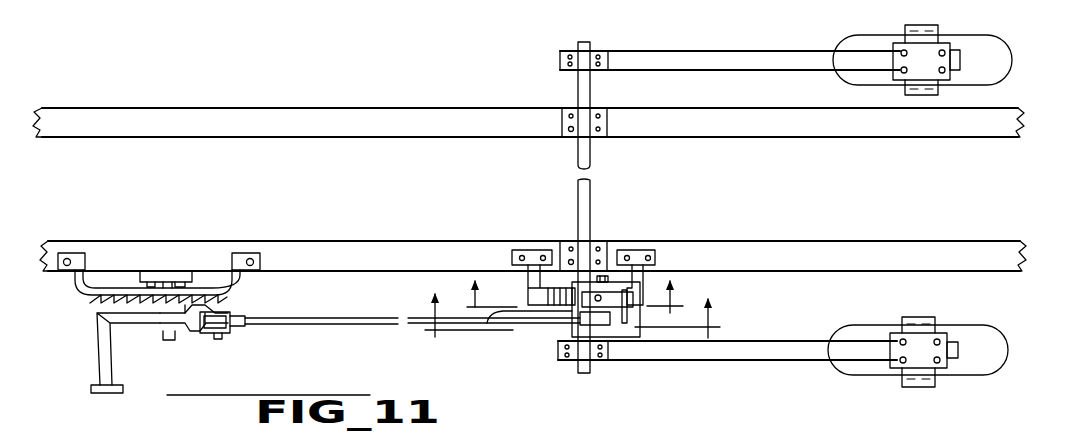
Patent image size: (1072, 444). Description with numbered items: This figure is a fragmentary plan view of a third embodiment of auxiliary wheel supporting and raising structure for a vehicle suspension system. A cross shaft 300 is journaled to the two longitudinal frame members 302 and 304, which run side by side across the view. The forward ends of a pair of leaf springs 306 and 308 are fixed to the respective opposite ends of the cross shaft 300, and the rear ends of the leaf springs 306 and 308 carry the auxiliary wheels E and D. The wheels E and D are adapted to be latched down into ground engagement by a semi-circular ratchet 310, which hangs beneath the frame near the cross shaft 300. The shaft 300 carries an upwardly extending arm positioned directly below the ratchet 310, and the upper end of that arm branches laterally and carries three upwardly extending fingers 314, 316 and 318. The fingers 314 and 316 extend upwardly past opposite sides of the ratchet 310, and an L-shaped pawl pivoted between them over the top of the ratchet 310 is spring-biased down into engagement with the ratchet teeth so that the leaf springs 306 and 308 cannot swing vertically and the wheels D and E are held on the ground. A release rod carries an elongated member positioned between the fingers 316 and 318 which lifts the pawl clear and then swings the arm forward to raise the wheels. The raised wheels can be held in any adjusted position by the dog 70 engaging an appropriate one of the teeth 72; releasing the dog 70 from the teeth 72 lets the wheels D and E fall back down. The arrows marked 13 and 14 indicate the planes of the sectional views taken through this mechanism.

The cross shaft 300 is at (588, 203).
The longitudinal frame member 302 is at (855, 246).
The longitudinal frame member 304 is at (741, 130).
The leaf spring 306 is at (700, 62).
The leaf spring 308 is at (752, 352).
The semi-circular ratchet 310 is at (558, 289).
The finger 314 is at (610, 285).
The finger 316 is at (490, 323).
The finger 318 is at (572, 337).
The dog 70 is at (133, 308).
The teeth 72 is at (100, 301).
The section line 13 is at (576, 294).
The section line 14 is at (573, 315).
The auxiliary wheel E is at (1013, 51).
The auxiliary wheel D is at (1011, 340).